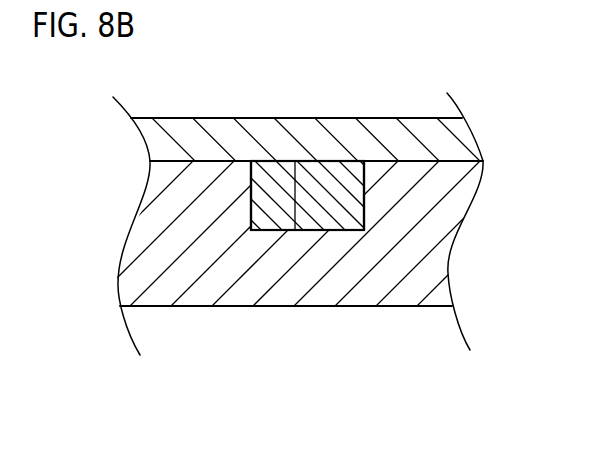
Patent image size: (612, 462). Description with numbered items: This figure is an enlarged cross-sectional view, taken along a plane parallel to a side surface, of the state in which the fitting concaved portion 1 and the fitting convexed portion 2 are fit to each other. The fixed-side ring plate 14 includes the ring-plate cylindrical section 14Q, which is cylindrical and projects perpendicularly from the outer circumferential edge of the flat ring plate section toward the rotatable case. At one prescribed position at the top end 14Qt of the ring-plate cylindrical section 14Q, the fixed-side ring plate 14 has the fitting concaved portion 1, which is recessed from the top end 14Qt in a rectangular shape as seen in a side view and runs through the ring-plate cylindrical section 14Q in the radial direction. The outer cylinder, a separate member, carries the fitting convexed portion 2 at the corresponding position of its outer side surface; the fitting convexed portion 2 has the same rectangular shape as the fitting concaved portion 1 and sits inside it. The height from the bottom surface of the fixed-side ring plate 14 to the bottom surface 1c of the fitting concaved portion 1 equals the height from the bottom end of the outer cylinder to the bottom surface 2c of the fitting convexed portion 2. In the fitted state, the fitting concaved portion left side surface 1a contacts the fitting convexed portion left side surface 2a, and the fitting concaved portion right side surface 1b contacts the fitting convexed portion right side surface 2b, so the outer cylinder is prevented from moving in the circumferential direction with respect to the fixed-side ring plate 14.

The fitting concaved portion 1 is at (250, 187).
The fitting concaved portion left side surface 1a is at (250, 207).
The fitting concaved portion right side surface 1b is at (364, 213).
The bottom surface of the fitting concaved portion 1c is at (312, 232).
The fitting convexed portion 2 is at (310, 149).
The fitting convexed portion left side surface 2a is at (258, 193).
The fitting convexed portion right side surface 2b is at (357, 186).
The bottom surface of the fitting convexed portion 2c is at (294, 200).
The fixed-side ring plate 14 is at (416, 313).
The ring-plate cylindrical section 14Q is at (448, 265).
The top end of the ring-plate cylindrical section 14Qt is at (448, 162).